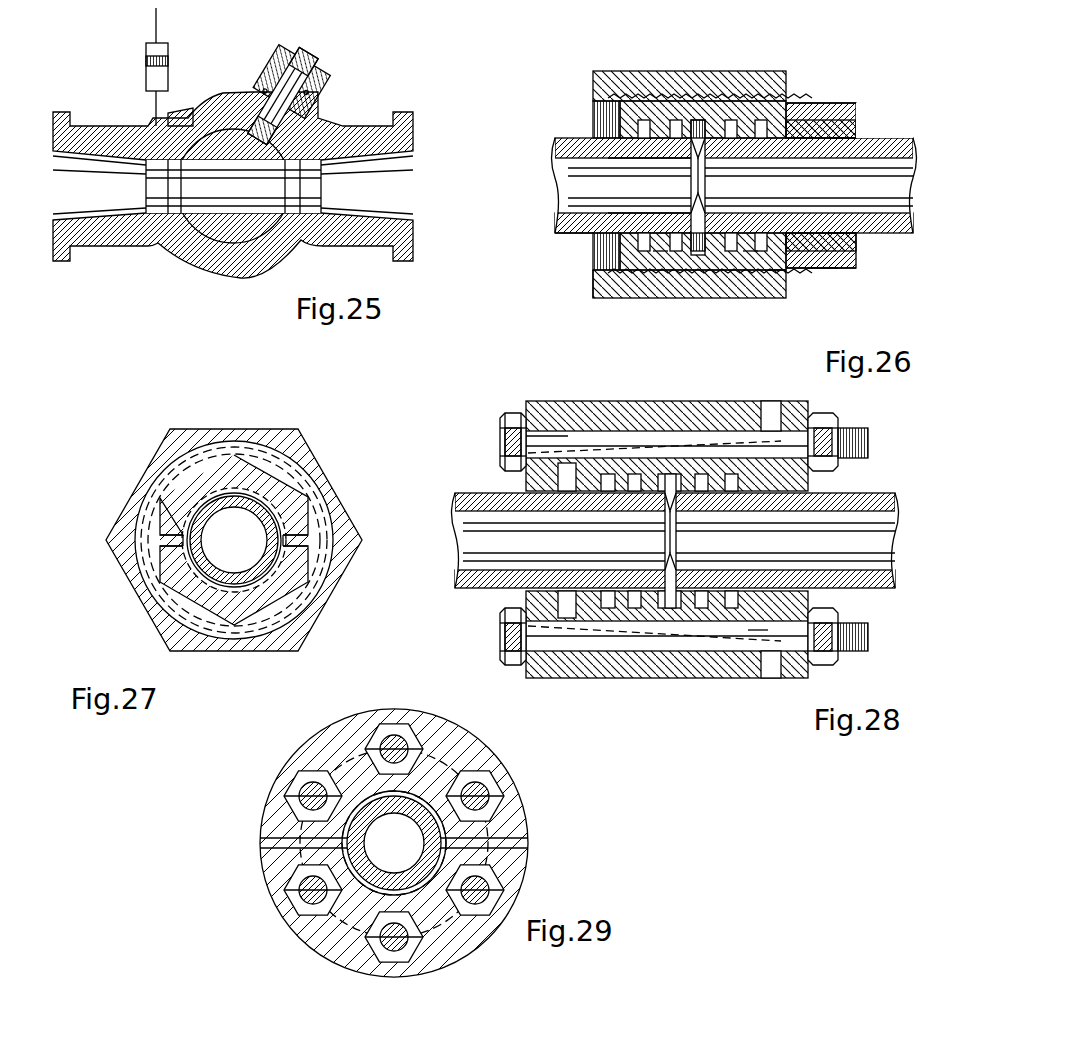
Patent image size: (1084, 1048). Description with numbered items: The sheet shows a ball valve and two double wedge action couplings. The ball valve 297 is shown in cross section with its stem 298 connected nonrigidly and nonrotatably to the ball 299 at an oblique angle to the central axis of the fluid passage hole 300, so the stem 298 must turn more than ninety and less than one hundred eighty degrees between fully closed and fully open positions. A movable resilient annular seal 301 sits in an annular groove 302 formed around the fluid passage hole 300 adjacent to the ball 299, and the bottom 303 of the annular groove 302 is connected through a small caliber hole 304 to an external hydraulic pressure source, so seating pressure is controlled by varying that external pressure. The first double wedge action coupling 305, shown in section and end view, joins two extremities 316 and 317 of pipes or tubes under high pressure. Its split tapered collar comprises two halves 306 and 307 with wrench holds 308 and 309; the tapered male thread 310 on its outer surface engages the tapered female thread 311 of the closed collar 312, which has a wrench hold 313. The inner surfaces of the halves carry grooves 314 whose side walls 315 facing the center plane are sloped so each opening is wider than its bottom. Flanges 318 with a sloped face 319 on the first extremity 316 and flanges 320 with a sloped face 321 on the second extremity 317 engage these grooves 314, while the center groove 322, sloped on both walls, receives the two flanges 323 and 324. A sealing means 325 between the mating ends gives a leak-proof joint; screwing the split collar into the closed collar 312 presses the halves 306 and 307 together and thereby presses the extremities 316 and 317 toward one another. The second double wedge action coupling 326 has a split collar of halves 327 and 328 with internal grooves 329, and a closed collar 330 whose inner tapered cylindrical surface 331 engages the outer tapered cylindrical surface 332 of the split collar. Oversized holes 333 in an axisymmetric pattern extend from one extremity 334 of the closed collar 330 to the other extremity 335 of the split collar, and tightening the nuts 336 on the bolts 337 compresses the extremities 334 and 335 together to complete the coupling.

In FIG. 25, the ball valve 297 is at (233, 201).
In FIG. 25, the stem 298 is at (297, 72).
In FIG. 25, the ball 299 is at (222, 100).
In FIG. 25, the fluid passage hole 300 is at (148, 178).
In FIG. 25, the movable resilient annular seal 301 is at (180, 247).
In FIG. 25, the annular groove 302 is at (182, 110).
In FIG. 25, the bottom of the annular groove 303 is at (157, 227).
In FIG. 25, the small caliber hole 304 is at (110, 122).
In FIG. 26, the double wedge action coupling 305 is at (698, 290).
In FIG. 26, the half of the split tapered collar 306 is at (813, 263).
In FIG. 27, the half of the split tapered collar 306 is at (210, 597).
In FIG. 26, the half of the split tapered collar 307 is at (783, 100).
In FIG. 27, the half of the split tapered collar 307 is at (300, 467).
In FIG. 26, the wrench hold 308 is at (820, 93).
In FIG. 27, the wrench hold 308 is at (270, 487).
In FIG. 26, the wrench hold 309 is at (833, 262).
In FIG. 27, the wrench hold 309 is at (167, 600).
In FIG. 26, the tapered male thread 310 is at (689, 112).
In FIG. 26, the tapered female thread 311 is at (588, 118).
In FIG. 26, the closed collar 312 is at (612, 65).
In FIG. 27, the closed collar 312 is at (245, 430).
In FIG. 26, the wrench hold 313 is at (648, 63).
In FIG. 27, the wrench hold 313 is at (195, 420).
In FIG. 26, the grooves 314 is at (663, 163).
In FIG. 26, the sloped side wall of the grooves 315 is at (873, 173).
In FIG. 26, the first extremity of the pipe or tube 316 is at (560, 225).
In FIG. 26, the second extremity of the pipe or tube 317 is at (857, 160).
In FIG. 27, the second extremity of the pipe or tube 317 is at (250, 557).
In FIG. 26, the matching flanges 318 is at (620, 262).
In FIG. 26, the sloped face of the flanges 319 is at (590, 283).
In FIG. 26, the matching flanges 320 is at (770, 262).
In FIG. 26, the sloped face of the flanges 321 is at (817, 263).
In FIG. 26, the center groove 322 is at (670, 170).
In FIG. 26, the matching flange 323 is at (660, 262).
In FIG. 26, the matching flange 324 is at (745, 262).
In FIG. 26, the sealing means 325 is at (640, 178).
In FIG. 28, the double wedge action coupling 326 is at (675, 604).
In FIG. 28, the half of the split collar 327 is at (747, 580).
In FIG. 29, the half of the split collar 327 is at (519, 875).
In FIG. 28, the half of the split collar 328 is at (757, 468).
In FIG. 29, the half of the split collar 328 is at (521, 802).
In FIG. 28, the internal grooves 329 is at (668, 462).
In FIG. 28, the closed collar 330 is at (600, 405).
In FIG. 28, the inner tapered cylindrical surface 331 is at (555, 458).
In FIG. 28, the outer tapered cylindrical surface 332 is at (750, 625).
In FIG. 28, the holes 333 is at (548, 425).
In FIG. 28, the extremity of the closed collar 334 is at (495, 412).
In FIG. 28, the extremity of the split collar 335 is at (800, 395).
In FIG. 29, the extremity of the split collar 335 is at (322, 732).
In FIG. 28, the nuts 336 is at (812, 640).
In FIG. 29, the nuts 336 is at (417, 727).
In FIG. 28, the bolts 337 is at (492, 420).
In FIG. 29, the bolts 337 is at (420, 732).